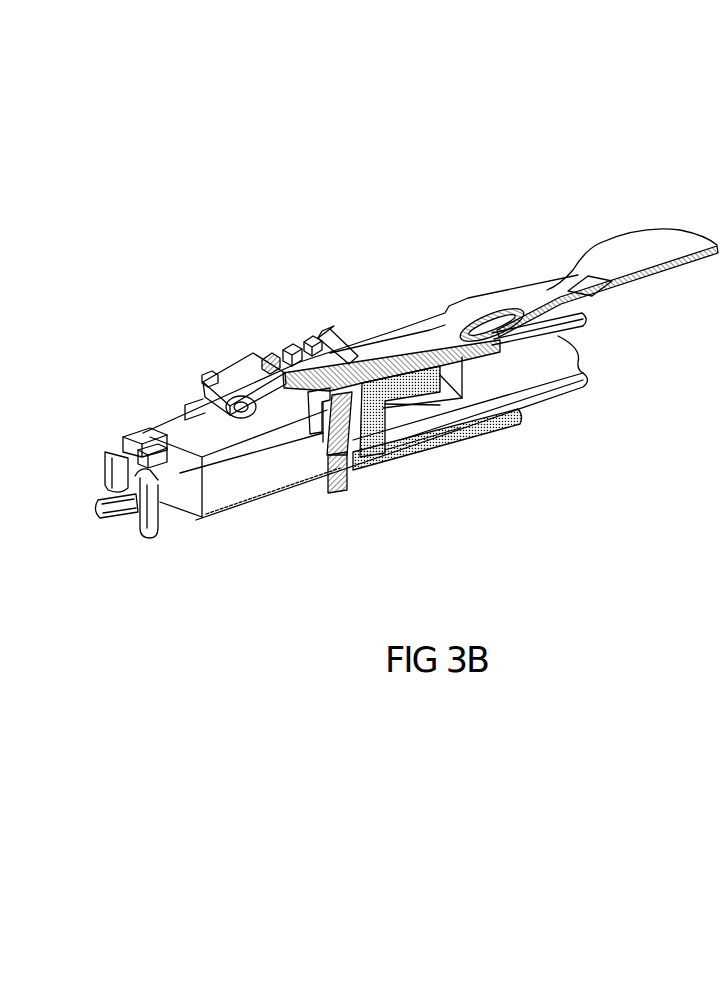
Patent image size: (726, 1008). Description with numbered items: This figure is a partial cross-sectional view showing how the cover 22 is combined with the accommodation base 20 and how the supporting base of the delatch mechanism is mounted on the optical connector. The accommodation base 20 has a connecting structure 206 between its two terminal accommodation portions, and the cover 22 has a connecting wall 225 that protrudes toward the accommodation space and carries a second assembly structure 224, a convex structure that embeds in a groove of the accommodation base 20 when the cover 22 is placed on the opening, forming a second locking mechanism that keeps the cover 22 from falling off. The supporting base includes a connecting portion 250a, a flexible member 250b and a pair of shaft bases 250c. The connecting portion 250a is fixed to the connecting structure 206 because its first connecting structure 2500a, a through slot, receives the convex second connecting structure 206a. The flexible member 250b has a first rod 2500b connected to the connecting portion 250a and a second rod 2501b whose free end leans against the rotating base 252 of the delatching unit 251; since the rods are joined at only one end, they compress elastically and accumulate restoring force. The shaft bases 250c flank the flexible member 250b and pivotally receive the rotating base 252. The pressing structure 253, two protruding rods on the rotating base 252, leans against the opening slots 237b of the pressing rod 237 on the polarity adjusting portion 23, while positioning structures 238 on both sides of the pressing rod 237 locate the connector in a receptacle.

The accommodation base 20 is at (588, 386).
The cover 22 is at (393, 312).
The polarity adjusting portion 23 is at (143, 410).
The connecting structure 206 is at (352, 455).
The second connecting structure 206a is at (333, 450).
The second assembly structure 224 is at (365, 452).
The connecting wall 225 is at (410, 417).
The pressing rod 237 is at (243, 372).
The opening slot 237b is at (285, 352).
The positioning structure 238 is at (203, 374).
The connecting portion 250a is at (335, 490).
The flexible member 250b is at (426, 251).
The shaft base 250c is at (312, 333).
The first connecting structure 2500a is at (337, 460).
The first rod 2500b is at (432, 357).
The second rod 2501b is at (415, 355).
The delatching unit 251 is at (621, 232).
The rotating base 252 is at (305, 348).
The pressing structure 253 is at (265, 346).